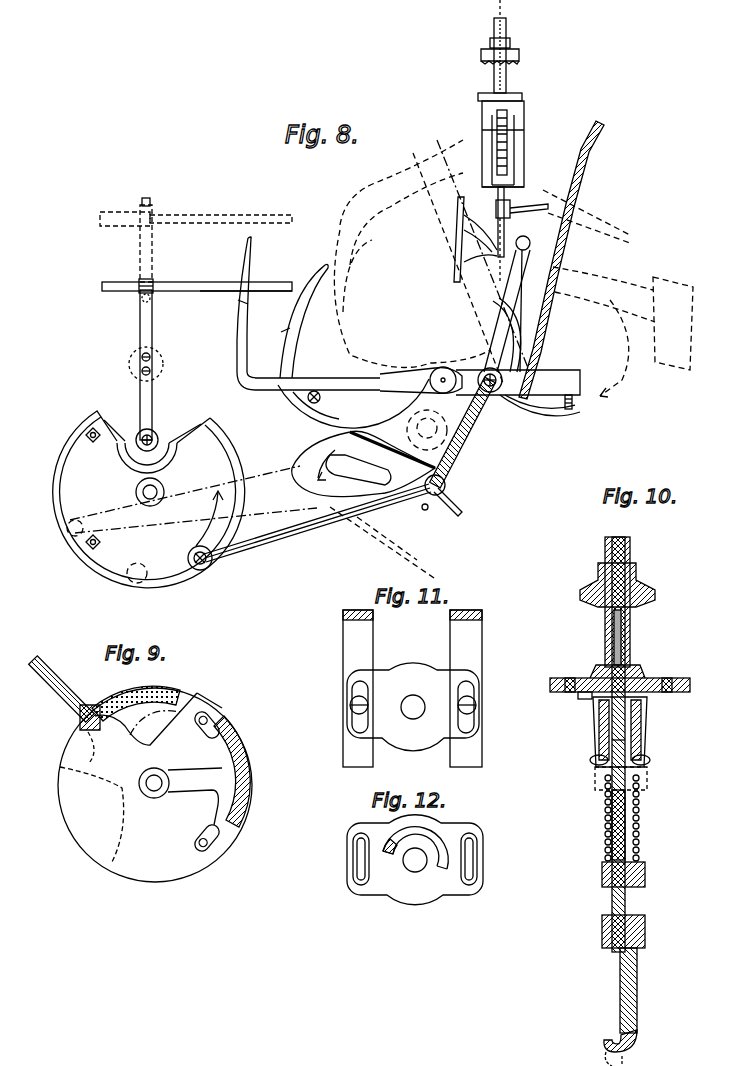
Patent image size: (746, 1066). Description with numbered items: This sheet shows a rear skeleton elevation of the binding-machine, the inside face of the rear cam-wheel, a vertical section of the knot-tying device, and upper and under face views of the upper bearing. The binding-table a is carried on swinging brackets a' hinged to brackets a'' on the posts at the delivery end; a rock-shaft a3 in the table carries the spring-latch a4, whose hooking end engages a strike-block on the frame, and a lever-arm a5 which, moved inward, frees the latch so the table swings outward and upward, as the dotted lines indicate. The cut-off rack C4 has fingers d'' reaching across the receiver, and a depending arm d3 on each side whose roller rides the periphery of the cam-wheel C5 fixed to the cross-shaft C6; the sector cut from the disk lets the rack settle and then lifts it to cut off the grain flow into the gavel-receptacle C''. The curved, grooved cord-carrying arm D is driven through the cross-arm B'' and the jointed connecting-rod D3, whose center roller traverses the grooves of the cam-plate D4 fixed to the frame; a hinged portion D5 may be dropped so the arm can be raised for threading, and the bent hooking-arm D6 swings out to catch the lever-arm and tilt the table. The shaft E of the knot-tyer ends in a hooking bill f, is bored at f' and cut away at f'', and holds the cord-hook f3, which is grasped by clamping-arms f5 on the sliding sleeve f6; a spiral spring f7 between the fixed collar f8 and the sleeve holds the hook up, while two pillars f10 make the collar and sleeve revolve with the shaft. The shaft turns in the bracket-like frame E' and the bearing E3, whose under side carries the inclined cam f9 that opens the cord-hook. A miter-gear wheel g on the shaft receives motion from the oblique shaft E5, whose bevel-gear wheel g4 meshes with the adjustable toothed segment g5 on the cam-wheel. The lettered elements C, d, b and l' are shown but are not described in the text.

In FIG. 8, the frame bar C is at (196, 240).
In FIG. 8, the cut-off rack C4 is at (197, 278).
In FIG. 8, the cam-wheel C5 is at (149, 499).
In FIG. 9, the cam-wheel C5 is at (155, 784).
In FIG. 8, the cross-shaft C6 is at (143, 492).
In FIG. 8, the gavel-receptacle C'' is at (384, 383).
In FIG. 8, the pivot pin d is at (147, 442).
In FIG. 8, the fingers d'' is at (245, 299).
In FIG. 8, the depending arm d3 is at (148, 365).
In FIG. 8, the cord-carrying arm D is at (304, 321).
In FIG. 8, the jointed connecting-rod D3 is at (341, 473).
In FIG. 8, the cam-plate D4 is at (363, 466).
In FIG. 8, the hinged portion D5 is at (442, 511).
In FIG. 8, the bent hooking-arm D6 is at (308, 313).
In FIG. 8, the link B'' is at (441, 380).
In FIG. 8, the binding-table a is at (524, 383).
In FIG. 8, the swinging brackets a' is at (507, 304).
In FIG. 8, the brackets a'' is at (475, 239).
In FIG. 8, the rock-shaft a3 is at (540, 413).
In FIG. 8, the spring-latch a4 is at (553, 413).
In FIG. 8, the lever-arm a5 is at (564, 260).
In FIG. 8, the curved bracket b is at (505, 335).
In FIG. 8, the shaft of the knot-tyer E is at (504, 46).
In FIG. 10, the shaft of the knot-tyer E is at (617, 737).
In FIG. 8, the miter-gear wheel g is at (505, 53).
In FIG. 10, the miter-gear wheel g is at (624, 586).
In FIG. 8, the clamping-arms f5 is at (506, 93).
In FIG. 10, the clamping-arms f5 is at (620, 767).
In FIG. 8, the sliding sleeve f6 is at (511, 144).
In FIG. 10, the sliding sleeve f6 is at (636, 720).
In FIG. 8, the spiral spring f7 is at (516, 142).
In FIG. 10, the spiral spring f7 is at (639, 835).
In FIG. 8, the fixed collar f8 is at (509, 183).
In FIG. 10, the fixed collar f8 is at (645, 870).
In FIG. 8, the pillars f10 is at (502, 150).
In FIG. 8, the lever l' is at (523, 234).
In FIG. 9, the oblique shaft E5 is at (62, 682).
In FIG. 9, the bevel-gear wheel g4 is at (90, 734).
In FIG. 9, the beveled toothed segment g5 is at (180, 773).
In FIG. 11, the bracket-like frame E' is at (412, 688).
In FIG. 11, the bearing E3 is at (413, 707).
In FIG. 12, the bearing E3 is at (415, 869).
In FIG. 10, the bearing E3 is at (630, 682).
In FIG. 12, the inclined cam f9 is at (416, 856).
In FIG. 10, the inclined cam f9 is at (675, 700).
In FIG. 10, the center bore f' is at (625, 602).
In FIG. 10, the cut-away portion f'' is at (630, 879).
In FIG. 10, the bill f is at (620, 990).
In FIG. 10, the cord-hook f3 is at (615, 1048).